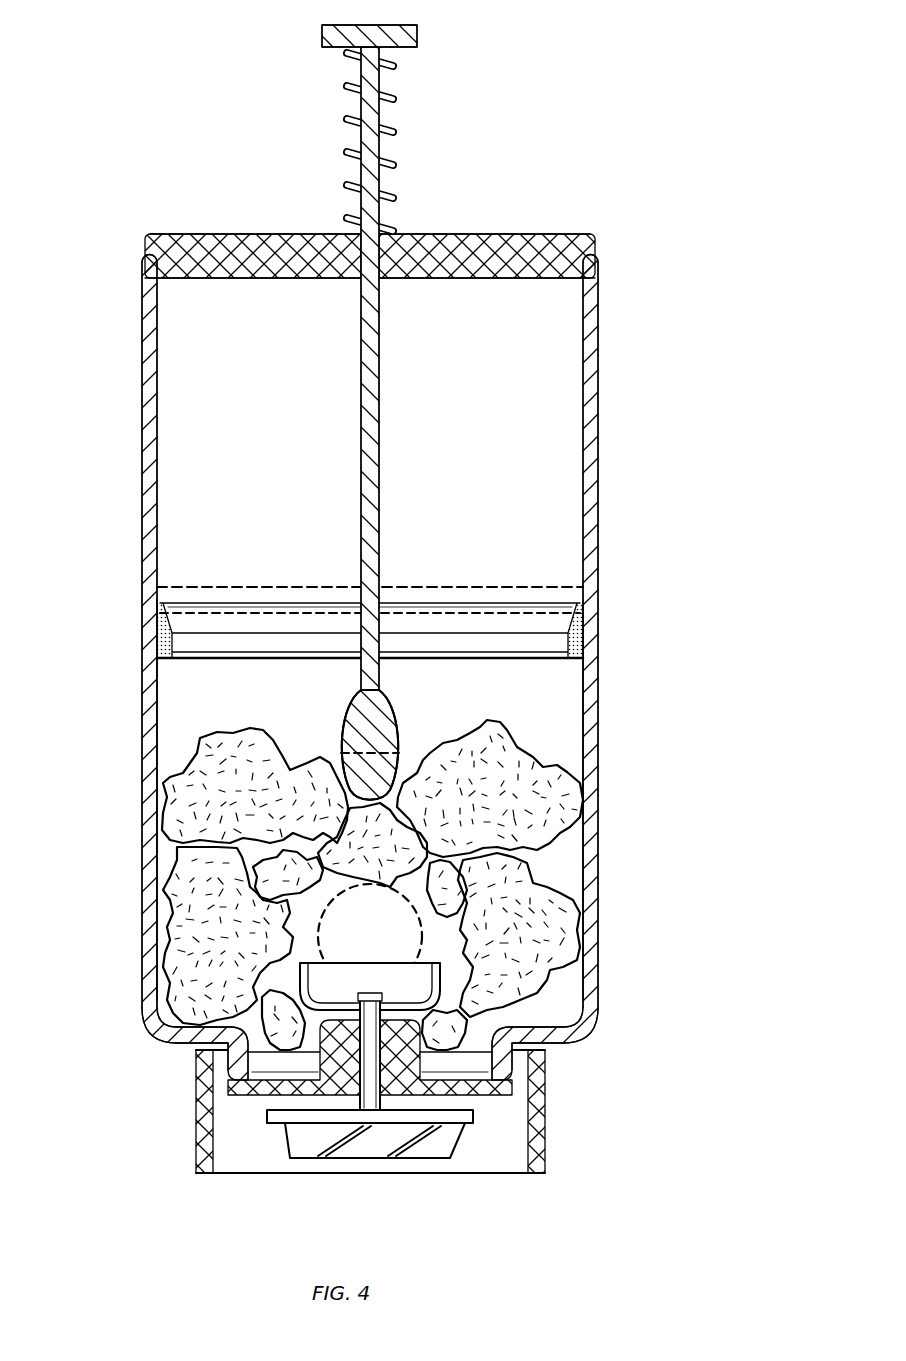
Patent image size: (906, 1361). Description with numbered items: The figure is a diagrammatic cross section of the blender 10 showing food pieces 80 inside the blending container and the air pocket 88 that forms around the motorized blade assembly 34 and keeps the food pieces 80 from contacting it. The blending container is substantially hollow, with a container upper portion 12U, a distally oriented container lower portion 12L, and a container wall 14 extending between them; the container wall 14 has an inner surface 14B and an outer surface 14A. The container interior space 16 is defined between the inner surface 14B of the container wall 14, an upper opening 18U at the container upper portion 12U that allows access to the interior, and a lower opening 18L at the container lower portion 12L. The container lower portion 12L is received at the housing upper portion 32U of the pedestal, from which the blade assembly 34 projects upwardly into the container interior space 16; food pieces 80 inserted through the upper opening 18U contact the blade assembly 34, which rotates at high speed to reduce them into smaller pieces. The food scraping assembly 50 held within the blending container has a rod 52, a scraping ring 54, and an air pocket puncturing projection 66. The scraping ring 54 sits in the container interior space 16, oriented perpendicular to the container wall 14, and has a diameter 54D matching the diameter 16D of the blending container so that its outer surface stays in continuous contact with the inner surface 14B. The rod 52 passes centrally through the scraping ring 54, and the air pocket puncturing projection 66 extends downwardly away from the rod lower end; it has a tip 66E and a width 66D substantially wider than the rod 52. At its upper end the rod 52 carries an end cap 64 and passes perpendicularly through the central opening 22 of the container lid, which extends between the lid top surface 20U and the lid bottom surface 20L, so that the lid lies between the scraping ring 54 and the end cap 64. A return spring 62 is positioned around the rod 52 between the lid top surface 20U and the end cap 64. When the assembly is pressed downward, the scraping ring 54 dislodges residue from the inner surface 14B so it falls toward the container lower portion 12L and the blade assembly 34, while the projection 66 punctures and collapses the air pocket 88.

The blender 10 is at (655, 430).
The container upper portion 12U is at (598, 260).
The container lower portion 12L is at (560, 1047).
The container wall 14 is at (409, 657).
The outer surface 14A is at (598, 552).
The inner surface 14B is at (584, 532).
The container interior space 16 is at (320, 765).
The diameter of the blending container 16D is at (193, 585).
The upper opening 18U is at (398, 209).
The lower seal 18L is at (230, 1090).
The lid top surface 20U is at (493, 232).
The lid bottom surface 20L is at (428, 276).
The container central opening 22 is at (398, 256).
The housing upper portion 32U is at (514, 1082).
The blade assembly 34 is at (441, 985).
The food scraping assembly 50 is at (415, 407).
The rod 52 is at (360, 398).
The scraping ring 54 is at (415, 617).
The diameter of the scraping ring 54D is at (558, 610).
The return spring 62 is at (398, 100).
The end cap 64 is at (418, 35).
The air pocket puncturing projection 66 is at (461, 737).
The width of the air pocket puncturing projection 66D is at (342, 742).
The tip 66E is at (371, 800).
The food pieces 80 is at (582, 793).
The air pocket 88 is at (418, 906).